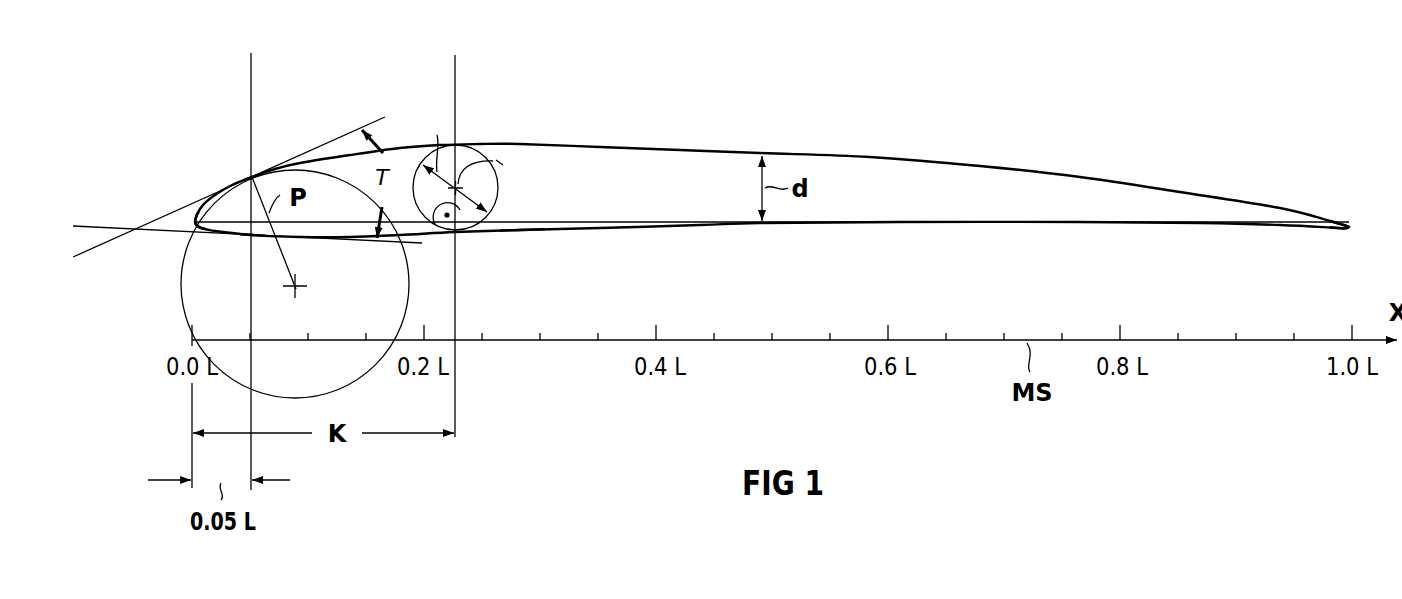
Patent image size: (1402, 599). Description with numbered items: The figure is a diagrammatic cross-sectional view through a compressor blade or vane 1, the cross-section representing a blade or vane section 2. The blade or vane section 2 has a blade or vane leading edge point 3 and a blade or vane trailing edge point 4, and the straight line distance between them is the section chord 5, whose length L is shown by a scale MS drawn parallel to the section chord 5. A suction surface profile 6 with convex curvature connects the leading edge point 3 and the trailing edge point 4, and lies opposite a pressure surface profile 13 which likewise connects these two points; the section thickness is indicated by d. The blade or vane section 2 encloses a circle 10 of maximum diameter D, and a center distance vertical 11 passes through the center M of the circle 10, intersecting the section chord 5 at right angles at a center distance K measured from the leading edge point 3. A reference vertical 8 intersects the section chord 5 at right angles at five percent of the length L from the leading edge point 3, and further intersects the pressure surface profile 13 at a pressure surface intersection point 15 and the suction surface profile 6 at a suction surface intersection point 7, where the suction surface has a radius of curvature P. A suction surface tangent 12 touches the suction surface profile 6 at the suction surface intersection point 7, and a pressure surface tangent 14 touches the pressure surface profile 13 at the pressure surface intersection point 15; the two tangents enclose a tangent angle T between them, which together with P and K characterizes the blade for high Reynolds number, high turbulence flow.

The compressor blade or vane 1 is at (627, 62).
The blade or vane section 2 is at (727, 172).
The blade or vane leading edge point 3 is at (193, 221).
The blade or vane trailing edge point 4 is at (1350, 225).
The section chord 5 is at (353, 236).
The suction surface profile 6 is at (873, 157).
The suction surface intersection point 7 is at (253, 175).
The reference vertical 8 is at (252, 66).
The circle 10 is at (498, 192).
The center distance vertical 11 is at (455, 75).
The suction surface tangent 12 is at (383, 117).
The pressure surface profile 13 is at (523, 233).
The pressure surface tangent 14 is at (85, 227).
The pressure surface intersection point 15 is at (249, 235).